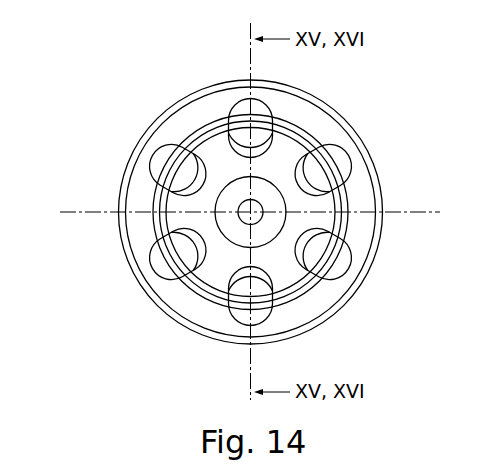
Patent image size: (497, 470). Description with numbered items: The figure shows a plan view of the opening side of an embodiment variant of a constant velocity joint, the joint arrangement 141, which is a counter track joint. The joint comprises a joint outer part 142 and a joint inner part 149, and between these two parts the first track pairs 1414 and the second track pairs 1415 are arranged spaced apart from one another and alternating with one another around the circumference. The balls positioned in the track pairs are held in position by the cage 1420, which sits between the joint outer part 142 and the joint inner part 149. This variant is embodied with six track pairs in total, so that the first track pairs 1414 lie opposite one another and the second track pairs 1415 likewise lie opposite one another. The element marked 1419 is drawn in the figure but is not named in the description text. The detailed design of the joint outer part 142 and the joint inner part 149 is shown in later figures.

The joint arrangement 141 is at (122, 120).
The joint outer part 142 is at (133, 223).
The joint inner part 149 is at (215, 278).
The first track pairs 1414 is at (245, 103).
The second track pairs 1415 is at (256, 320).
The roller pocket 1419 is at (344, 156).
The cage 1420 is at (158, 268).